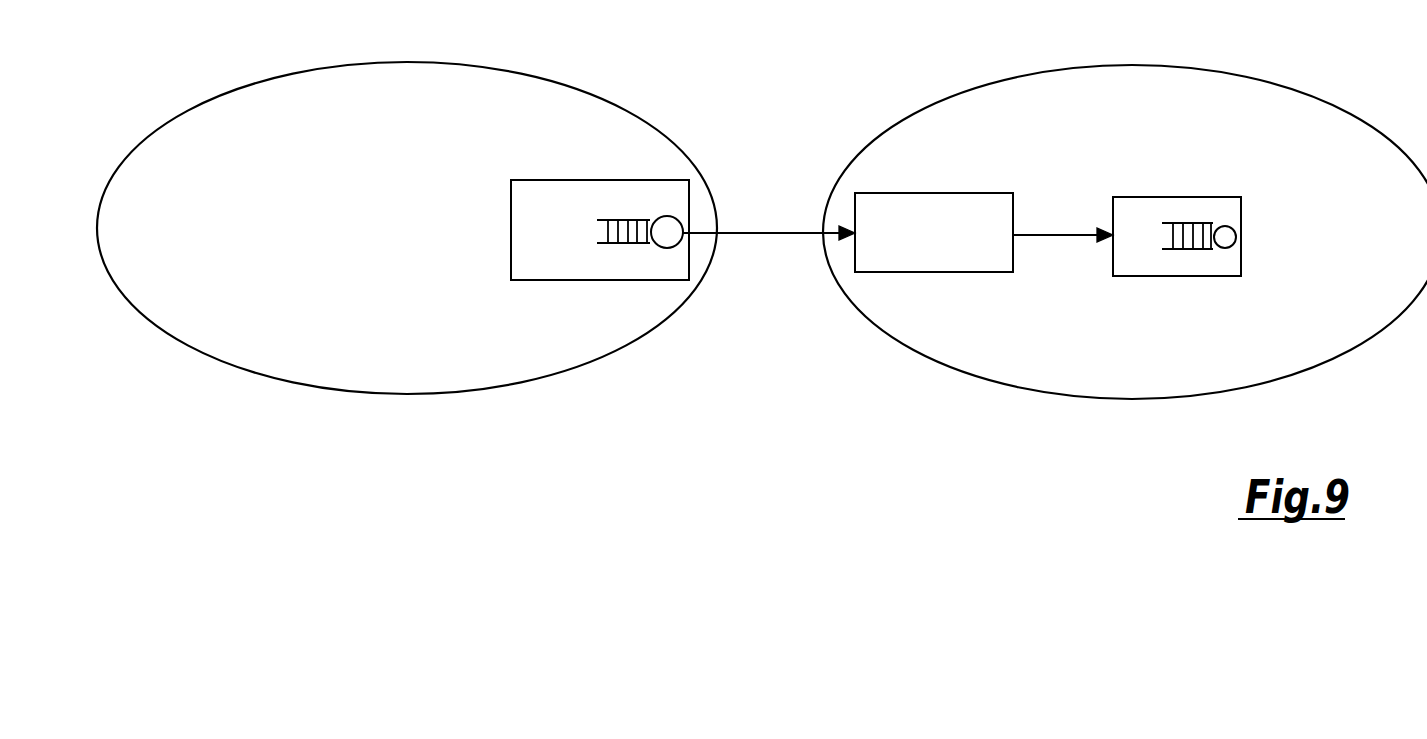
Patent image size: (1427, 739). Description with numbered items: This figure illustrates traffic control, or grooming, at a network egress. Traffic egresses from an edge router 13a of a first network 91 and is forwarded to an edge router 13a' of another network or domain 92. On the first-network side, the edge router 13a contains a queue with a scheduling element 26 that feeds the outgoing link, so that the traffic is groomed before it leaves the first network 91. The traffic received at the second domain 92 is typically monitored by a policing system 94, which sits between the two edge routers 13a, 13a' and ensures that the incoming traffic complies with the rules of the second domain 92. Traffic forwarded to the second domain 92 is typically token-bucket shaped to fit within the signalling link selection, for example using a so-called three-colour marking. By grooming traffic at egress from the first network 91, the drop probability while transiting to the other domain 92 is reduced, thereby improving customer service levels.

The first network 91 is at (465, 392).
The second domain 92 is at (992, 380).
The edge router 13a is at (600, 165).
The edge router 13a' is at (1220, 317).
The dk scheduler / deadline scheduler 26 is at (665, 248).
The policing system 94 is at (905, 193).